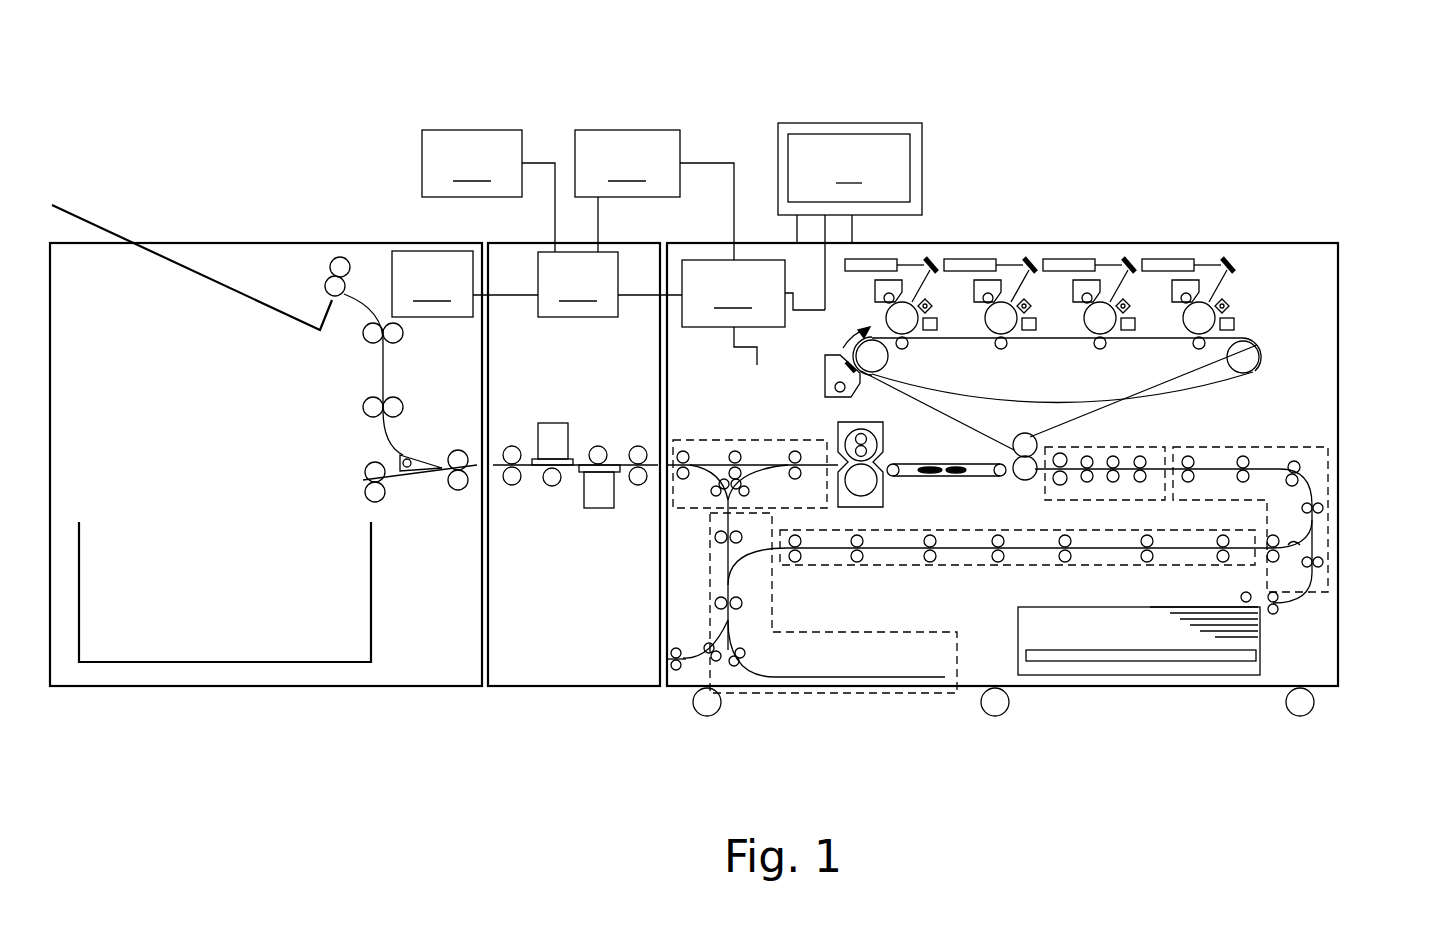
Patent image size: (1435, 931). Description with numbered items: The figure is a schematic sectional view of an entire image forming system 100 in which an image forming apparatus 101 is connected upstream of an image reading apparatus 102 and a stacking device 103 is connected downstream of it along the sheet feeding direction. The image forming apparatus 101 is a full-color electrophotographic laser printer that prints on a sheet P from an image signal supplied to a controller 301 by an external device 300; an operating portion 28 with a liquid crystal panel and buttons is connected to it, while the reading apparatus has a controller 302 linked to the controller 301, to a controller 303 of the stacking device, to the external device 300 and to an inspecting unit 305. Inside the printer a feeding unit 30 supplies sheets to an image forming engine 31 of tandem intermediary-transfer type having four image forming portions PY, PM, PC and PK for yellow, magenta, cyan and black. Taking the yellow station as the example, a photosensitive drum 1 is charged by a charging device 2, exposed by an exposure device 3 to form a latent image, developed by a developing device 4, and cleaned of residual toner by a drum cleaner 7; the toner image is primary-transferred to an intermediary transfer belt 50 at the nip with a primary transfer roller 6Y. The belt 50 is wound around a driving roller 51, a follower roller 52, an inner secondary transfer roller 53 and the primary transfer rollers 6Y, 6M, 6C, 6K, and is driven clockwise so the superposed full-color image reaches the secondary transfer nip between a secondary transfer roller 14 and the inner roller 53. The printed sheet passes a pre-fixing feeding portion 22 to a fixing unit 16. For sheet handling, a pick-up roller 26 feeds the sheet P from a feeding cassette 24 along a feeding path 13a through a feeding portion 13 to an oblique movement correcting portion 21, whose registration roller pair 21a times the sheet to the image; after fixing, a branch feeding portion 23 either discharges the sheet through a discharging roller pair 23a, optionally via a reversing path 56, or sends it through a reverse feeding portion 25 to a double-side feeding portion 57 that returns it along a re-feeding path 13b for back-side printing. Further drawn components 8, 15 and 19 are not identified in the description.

The image forming system 100 is at (741, 110).
The image forming apparatus 101 is at (1265, 180).
The image reading apparatus 102 is at (570, 640).
The stacking device 103 is at (413, 640).
The photosensitive drum 1 is at (895, 221).
The charging device 2 is at (938, 311).
The exposure device 3 is at (867, 258).
The developing device 4 is at (882, 297).
The drum cleaner 7 is at (937, 324).
The fixing device 8 is at (861, 445).
The feeding portion 13 is at (1298, 532).
The feeding path 13a is at (1315, 545).
The re-feeding path 13b is at (1313, 522).
The secondary transfer roller 14 is at (1026, 481).
The conveyance belt 15 is at (996, 476).
The fixing unit 16 is at (867, 586).
The belt cleaning device 19 is at (835, 388).
The oblique movement correcting portion 21 is at (1220, 588).
The registration roller pair 21a is at (1076, 486).
The pre-fixing feeding portion 22 is at (912, 478).
The branch feeding portion 23 is at (719, 442).
The discharging roller pair 23a is at (683, 450).
The feeding cassette 24 is at (1139, 679).
The reverse feeding portion 25 is at (741, 679).
The pick-up roller 26 is at (1250, 602).
The operating portion 28 is at (850, 169).
The feeding unit 30 is at (1148, 687).
The image forming engine 31 is at (1134, 362).
The intermediary transfer belt 50 is at (1203, 398).
The driving roller 51 is at (1100, 407).
The follower roller 52 is at (1250, 357).
The inner secondary transfer roller 53 is at (1060, 486).
The reversing path 56 is at (690, 670).
The double-side feeding portion 57 is at (832, 562).
The primary transfer roller 6Y is at (908, 349).
The primary transfer roller 6M is at (1003, 350).
The primary transfer roller 6C is at (1101, 350).
The primary transfer roller 6K is at (1262, 342).
The image forming portion PY is at (909, 218).
The image forming portion PM is at (999, 255).
The image forming portion PC is at (1092, 255).
The image forming portion PK is at (1265, 228).
The sheet P is at (1240, 635).
The external device 300 is at (627, 163).
The controller 301 is at (733, 293).
The controller 302 is at (578, 284).
The controller 303 is at (432, 284).
The inspecting unit 305 is at (472, 163).